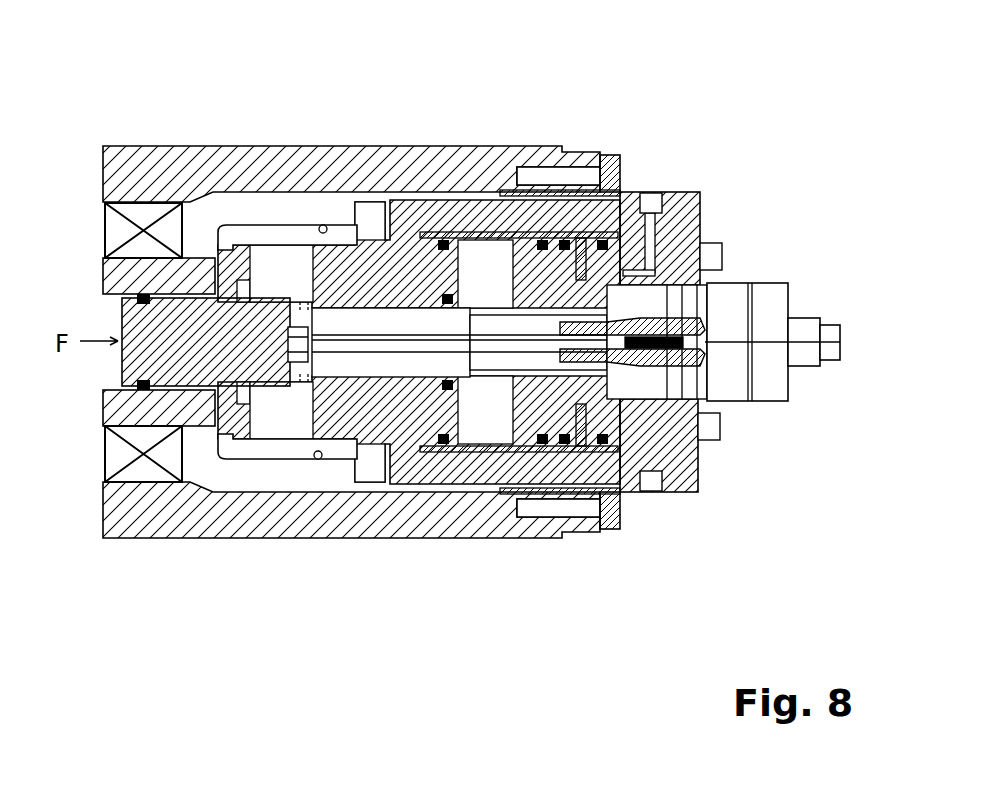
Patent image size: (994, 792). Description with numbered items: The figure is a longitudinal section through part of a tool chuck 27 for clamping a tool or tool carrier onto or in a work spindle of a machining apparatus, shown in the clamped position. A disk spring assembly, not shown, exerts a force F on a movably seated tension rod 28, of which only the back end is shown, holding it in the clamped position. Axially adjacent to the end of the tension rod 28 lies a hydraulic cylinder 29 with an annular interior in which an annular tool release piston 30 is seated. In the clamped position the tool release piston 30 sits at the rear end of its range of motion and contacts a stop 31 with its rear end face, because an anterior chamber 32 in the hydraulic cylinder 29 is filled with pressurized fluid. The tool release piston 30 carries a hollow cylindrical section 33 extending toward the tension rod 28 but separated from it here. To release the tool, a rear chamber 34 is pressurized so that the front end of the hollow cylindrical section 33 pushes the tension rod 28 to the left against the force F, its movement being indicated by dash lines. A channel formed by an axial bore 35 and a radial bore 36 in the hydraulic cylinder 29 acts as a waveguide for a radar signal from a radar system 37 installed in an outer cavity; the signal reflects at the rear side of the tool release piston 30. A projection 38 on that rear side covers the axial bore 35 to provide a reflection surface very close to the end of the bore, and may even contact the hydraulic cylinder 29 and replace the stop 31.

The tool chuck 27 is at (243, 114).
The tension rod 28 is at (133, 367).
The hydraulic cylinder 29 is at (651, 470).
The tool release piston 30 is at (520, 410).
The stop 31 is at (568, 454).
The anterior chamber 32 is at (475, 418).
The hollow cylindrical section 33 is at (318, 433).
The rear chamber 34 is at (578, 412).
The axial bore 35 is at (630, 192).
The radial bore 36 is at (693, 222).
The radar system 37 is at (657, 192).
The projection 38 is at (578, 236).